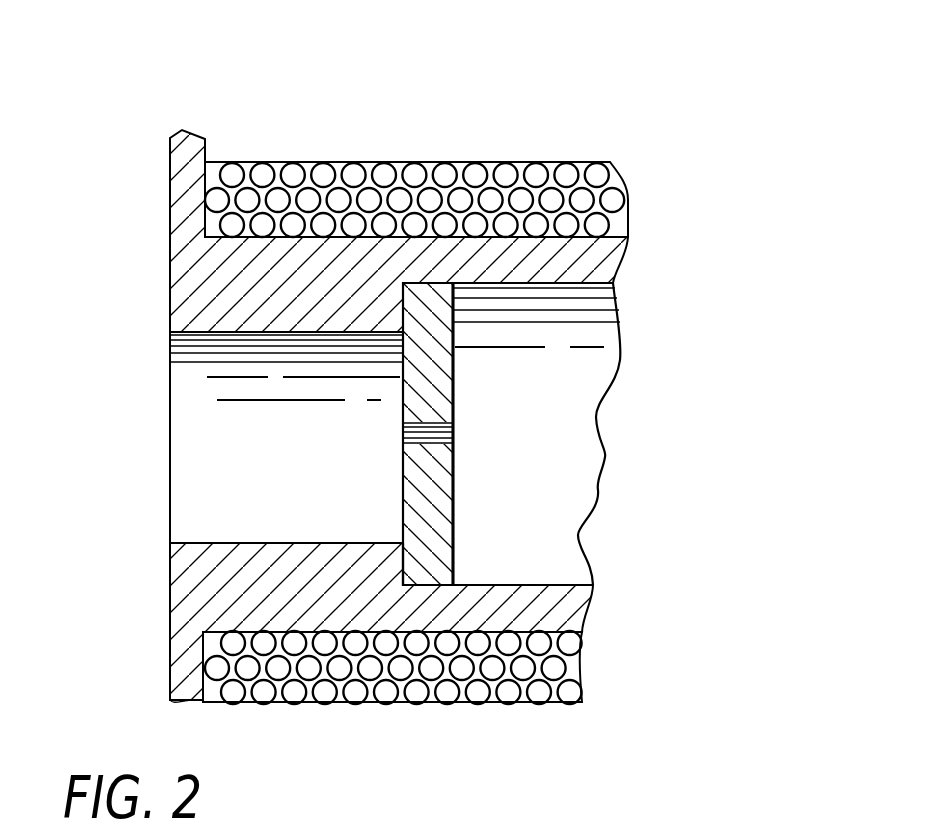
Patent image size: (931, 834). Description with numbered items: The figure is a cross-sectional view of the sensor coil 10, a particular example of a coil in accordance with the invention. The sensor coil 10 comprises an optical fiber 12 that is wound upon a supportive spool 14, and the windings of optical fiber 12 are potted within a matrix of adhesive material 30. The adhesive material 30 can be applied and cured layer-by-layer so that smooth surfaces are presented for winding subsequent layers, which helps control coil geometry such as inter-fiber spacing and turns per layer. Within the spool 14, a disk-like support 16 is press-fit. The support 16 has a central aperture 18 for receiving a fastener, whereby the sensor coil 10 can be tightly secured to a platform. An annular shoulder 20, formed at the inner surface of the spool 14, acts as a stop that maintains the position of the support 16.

The sensor coil 10 is at (528, 134).
The optical fiber 12 is at (412, 165).
The spool 14 is at (188, 282).
The support 16 is at (438, 383).
The central aperture 18 is at (443, 438).
The annular shoulder 20 is at (400, 572).
The adhesive material 30 is at (308, 167).